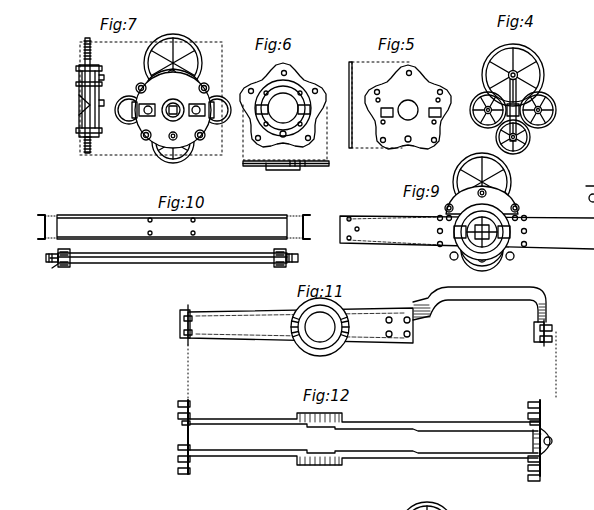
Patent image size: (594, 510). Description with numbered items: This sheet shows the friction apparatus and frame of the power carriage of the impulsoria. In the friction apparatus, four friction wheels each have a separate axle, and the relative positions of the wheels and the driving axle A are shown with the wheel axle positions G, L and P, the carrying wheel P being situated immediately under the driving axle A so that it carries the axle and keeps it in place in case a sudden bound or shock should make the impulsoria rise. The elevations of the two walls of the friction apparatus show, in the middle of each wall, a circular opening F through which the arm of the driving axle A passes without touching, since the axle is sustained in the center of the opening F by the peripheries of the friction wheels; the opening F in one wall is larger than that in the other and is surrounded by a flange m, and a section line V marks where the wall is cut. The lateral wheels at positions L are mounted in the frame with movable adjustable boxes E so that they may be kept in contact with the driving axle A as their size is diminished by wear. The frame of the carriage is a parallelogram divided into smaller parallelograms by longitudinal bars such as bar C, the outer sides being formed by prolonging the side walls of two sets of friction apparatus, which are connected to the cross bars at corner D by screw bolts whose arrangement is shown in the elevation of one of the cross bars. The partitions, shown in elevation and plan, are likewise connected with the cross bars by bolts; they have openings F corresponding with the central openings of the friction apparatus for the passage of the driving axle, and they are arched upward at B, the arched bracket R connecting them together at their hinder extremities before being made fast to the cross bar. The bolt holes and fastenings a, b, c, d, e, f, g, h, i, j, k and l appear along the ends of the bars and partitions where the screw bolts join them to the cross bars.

In FIG. 7, the friction wheel axle position G is at (173, 58).
In FIG. 6, the friction wheel axle position G is at (283, 69).
In FIG. 5, the friction wheel axle position G is at (408, 69).
In FIG. 4, the friction wheel axle position G is at (513, 69).
In FIG. 9, the friction wheel axle position G is at (482, 183).
In FIG. 7, the driving axle A is at (136, 85).
In FIG. 9, the driving axle A is at (462, 221).
In FIG. 7, the arched partition portion B is at (206, 85).
In FIG. 9, the arched partition portion B is at (482, 247).
In FIG. 7, the longitudinal bar C is at (142, 142).
In FIG. 11, the longitudinal bar C is at (411, 300).
In FIG. 7, the cross bar corner D is at (204, 141).
In FIG. 7, the movable adjustable box E is at (173, 107).
In FIG. 4, the movable adjustable box E is at (513, 110).
In FIG. 7, the carrying wheel P is at (173, 120).
In FIG. 6, the carrying wheel P is at (282, 130).
In FIG. 5, the carrying wheel P is at (407, 135).
In FIG. 4, the carrying wheel P is at (513, 145).
In FIG. 7, the lateral friction wheel axle position L is at (173, 110).
In FIG. 6, the lateral friction wheel axle position L is at (283, 105).
In FIG. 5, the lateral friction wheel axle position L is at (411, 108).
In FIG. 4, the lateral friction wheel axle position L is at (513, 110).
In FIG. 6, the circular opening F is at (283, 105).
In FIG. 5, the circular opening F is at (408, 107).
In FIG. 11, the circular opening F is at (296, 327).
In FIG. 7, the flange m is at (76, 130).
In FIG. 6, the flange m is at (286, 169).
In FIG. 6, the section line V is at (285, 137).
In FIG. 5, the section line V is at (379, 104).
In FIG. 11, the bent bracket R is at (479, 299).
In FIG. 10, the hole a is at (174, 241).
In FIG. 9, the hole a is at (358, 220).
In FIG. 11, the hole a is at (384, 320).
In FIG. 12, the hole a is at (359, 437).
In FIG. 10, the hole b is at (173, 259).
In FIG. 9, the hole b is at (371, 231).
In FIG. 11, the hole b is at (403, 322).
In FIG. 12, the hole b is at (178, 416).
In FIG. 10, the hole c is at (172, 270).
In FIG. 9, the hole c is at (354, 241).
In FIG. 11, the hole c is at (385, 335).
In FIG. 12, the hole c is at (183, 425).
In FIG. 9, the hole d is at (586, 185).
In FIG. 11, the hole d is at (403, 335).
In FIG. 12, the hole d is at (182, 445).
In FIG. 12, the fastening e is at (178, 458).
In FIG. 12, the fastening f is at (179, 471).
In FIG. 12, the fastening g is at (540, 404).
In FIG. 12, the fastening h is at (543, 416).
In FIG. 12, the fastening i is at (539, 423).
In FIG. 12, the fastening j is at (538, 458).
In FIG. 12, the fastening k is at (543, 466).
In FIG. 11, the fastening l is at (544, 329).
In FIG. 12, the fastening l is at (538, 478).